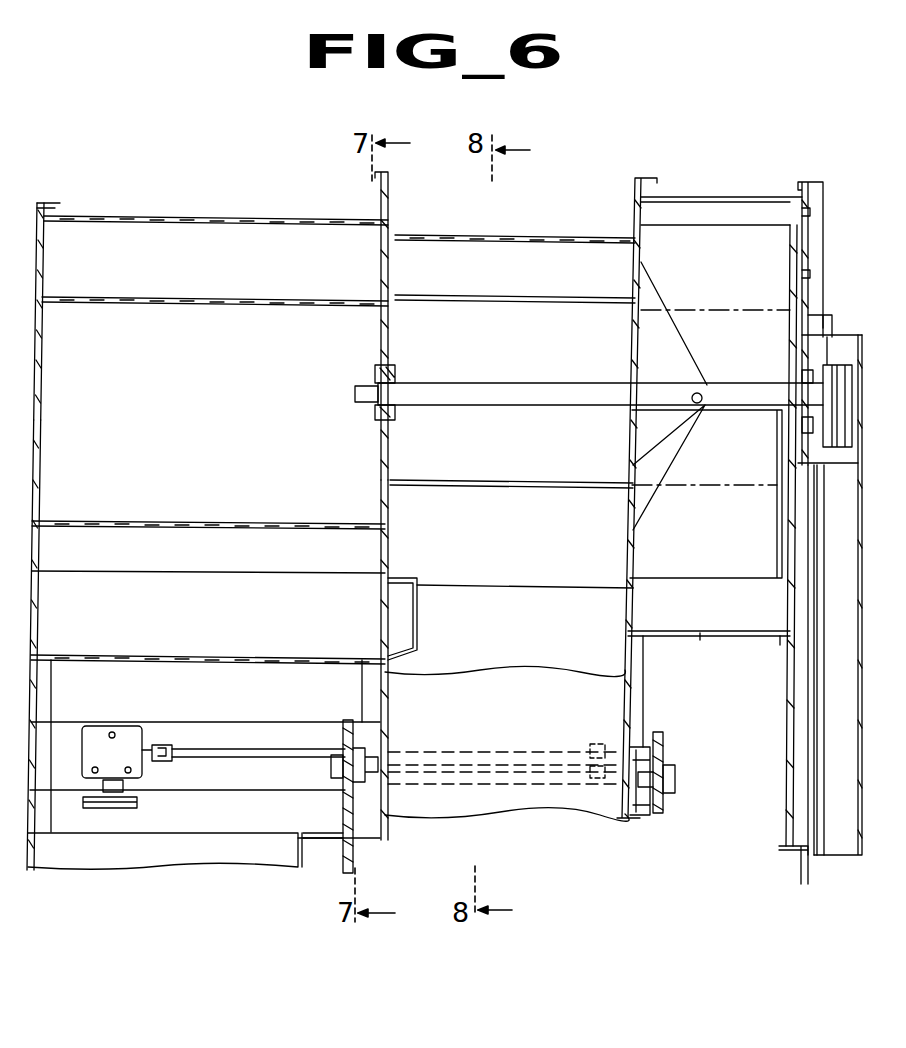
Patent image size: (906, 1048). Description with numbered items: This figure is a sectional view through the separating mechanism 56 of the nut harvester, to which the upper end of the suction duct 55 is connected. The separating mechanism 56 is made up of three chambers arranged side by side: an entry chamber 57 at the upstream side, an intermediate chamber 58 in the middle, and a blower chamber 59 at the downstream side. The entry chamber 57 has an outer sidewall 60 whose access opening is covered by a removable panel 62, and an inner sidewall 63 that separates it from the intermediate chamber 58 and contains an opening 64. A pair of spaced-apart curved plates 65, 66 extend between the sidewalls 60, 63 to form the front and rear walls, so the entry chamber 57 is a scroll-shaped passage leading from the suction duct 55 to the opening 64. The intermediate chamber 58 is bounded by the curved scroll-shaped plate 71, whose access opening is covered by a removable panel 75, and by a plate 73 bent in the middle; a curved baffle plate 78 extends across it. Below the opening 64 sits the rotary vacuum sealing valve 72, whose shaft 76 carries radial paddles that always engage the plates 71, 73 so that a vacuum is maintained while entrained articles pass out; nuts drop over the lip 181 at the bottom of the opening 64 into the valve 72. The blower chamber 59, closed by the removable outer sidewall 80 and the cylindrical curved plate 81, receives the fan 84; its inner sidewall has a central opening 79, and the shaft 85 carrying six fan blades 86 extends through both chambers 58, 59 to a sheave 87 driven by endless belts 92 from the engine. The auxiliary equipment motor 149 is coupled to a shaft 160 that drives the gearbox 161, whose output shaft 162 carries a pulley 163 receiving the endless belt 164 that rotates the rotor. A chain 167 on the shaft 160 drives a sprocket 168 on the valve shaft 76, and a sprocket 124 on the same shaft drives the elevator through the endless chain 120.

The suction duct 55 is at (256, 224).
The separating mechanism 56 is at (608, 168).
The entry chamber 57 is at (362, 563).
The intermediate chamber 58 is at (415, 452).
The blower chamber 59 is at (740, 578).
The outer sidewall 60 is at (40, 448).
The removable panel 62 is at (42, 392).
The sidewall 63 is at (385, 332).
The opening 64 is at (383, 648).
The curved plate 65 is at (220, 522).
The curved plate 66 is at (234, 657).
The curved scroll-shaped plate 71 is at (580, 250).
The rotary vacuum sealing valve 72 is at (582, 815).
The plate 73 is at (602, 586).
The removable panel 75 is at (470, 238).
The shaft 76 is at (553, 775).
The curved baffle plate 78 is at (502, 333).
The central opening 79 is at (632, 362).
The removable outer sidewall 80 is at (806, 222).
The curved plate 81 is at (758, 648).
The fan 84 is at (712, 402).
The shaft 85 is at (500, 406).
The fan blades 86 is at (692, 312).
The sheave 87 is at (838, 372).
The endless belts 92 is at (842, 448).
The endless chain 120 is at (666, 806).
The sprocket 124 is at (665, 758).
The auxiliary equipment motor 149 is at (640, 750).
The shaft 160 is at (258, 750).
The gearbox 161 is at (122, 732).
The output shaft 162 is at (120, 790).
The pulley 163 is at (125, 805).
The endless belt 164 is at (108, 808).
The chain 167 is at (343, 815).
The sprocket 168 is at (350, 720).
The lip 181 is at (405, 578).